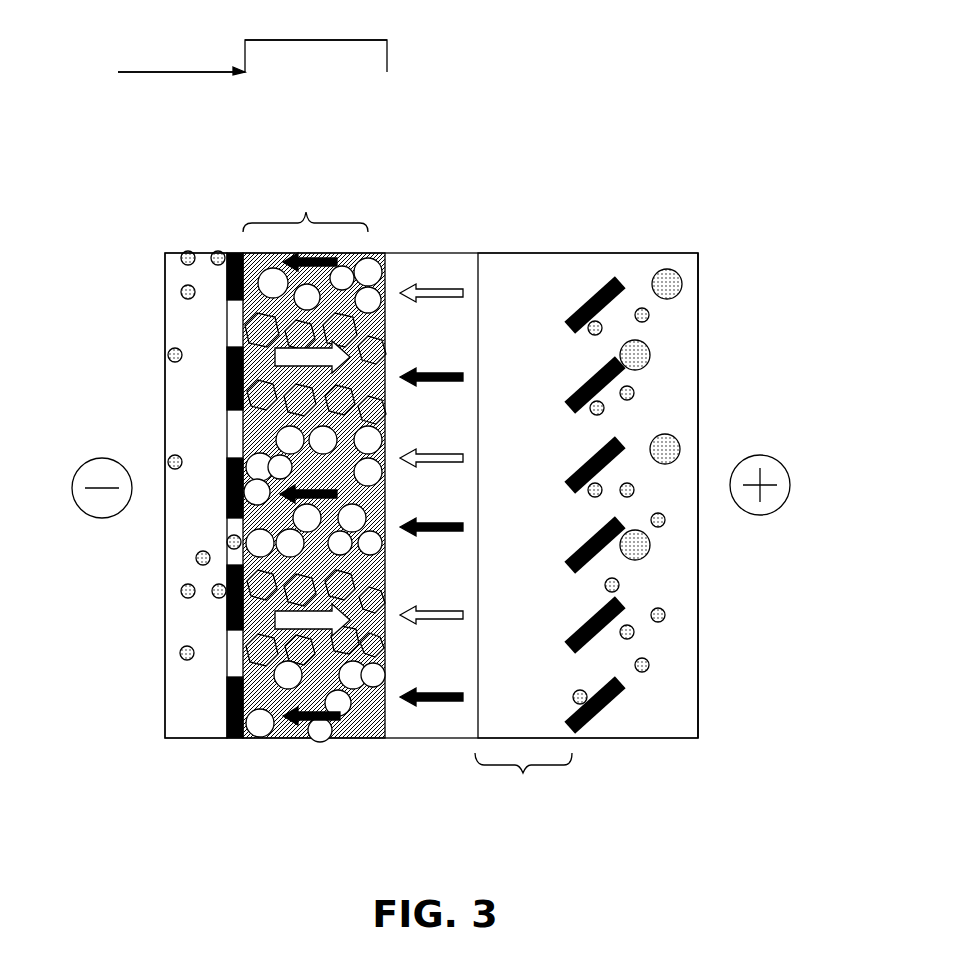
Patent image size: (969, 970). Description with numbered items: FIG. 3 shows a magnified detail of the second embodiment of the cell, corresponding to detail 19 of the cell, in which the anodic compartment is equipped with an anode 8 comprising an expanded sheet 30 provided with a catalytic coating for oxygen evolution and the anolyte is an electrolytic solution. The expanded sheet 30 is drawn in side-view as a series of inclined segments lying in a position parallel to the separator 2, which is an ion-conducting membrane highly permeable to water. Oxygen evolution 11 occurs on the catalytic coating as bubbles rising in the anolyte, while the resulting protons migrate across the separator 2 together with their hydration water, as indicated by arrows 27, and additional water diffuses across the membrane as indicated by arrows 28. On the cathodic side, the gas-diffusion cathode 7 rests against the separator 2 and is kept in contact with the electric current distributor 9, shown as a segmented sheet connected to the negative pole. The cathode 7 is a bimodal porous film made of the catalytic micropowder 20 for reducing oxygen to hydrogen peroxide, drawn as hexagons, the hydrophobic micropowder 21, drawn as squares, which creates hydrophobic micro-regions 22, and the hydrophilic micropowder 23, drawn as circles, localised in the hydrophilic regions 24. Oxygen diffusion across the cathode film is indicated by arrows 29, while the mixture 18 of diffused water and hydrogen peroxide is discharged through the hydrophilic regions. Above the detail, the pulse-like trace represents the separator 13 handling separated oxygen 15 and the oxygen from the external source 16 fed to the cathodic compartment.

The separator 2 is at (446, 268).
The gas-diffusion cathode 7 is at (212, 427).
The anode 8 is at (540, 770).
The electric current distributor 9 is at (227, 613).
The oxygen evolution 11 is at (650, 345).
The separator 13 is at (473, 73).
The separated oxygen 15 is at (387, 53).
The external oxygen source 16 is at (198, 72).
The mixture of water and hydrogen peroxide 18 is at (197, 565).
The detail 19 is at (603, 755).
The catalytic micropowder for oxygen reduction 20 is at (243, 328).
The hydrophobic micropowder 21 is at (247, 313).
The hydrophobic micro-regions 22 is at (212, 378).
The hydrophilic micropowder 23 is at (230, 252).
The hydrophilic regions 24 is at (212, 472).
The hydrated proton migration arrows 27 is at (413, 285).
The water flow arrows 28 is at (383, 594).
The oxygen diffusion arrows 29 is at (226, 718).
The expanded sheet 30 is at (598, 285).